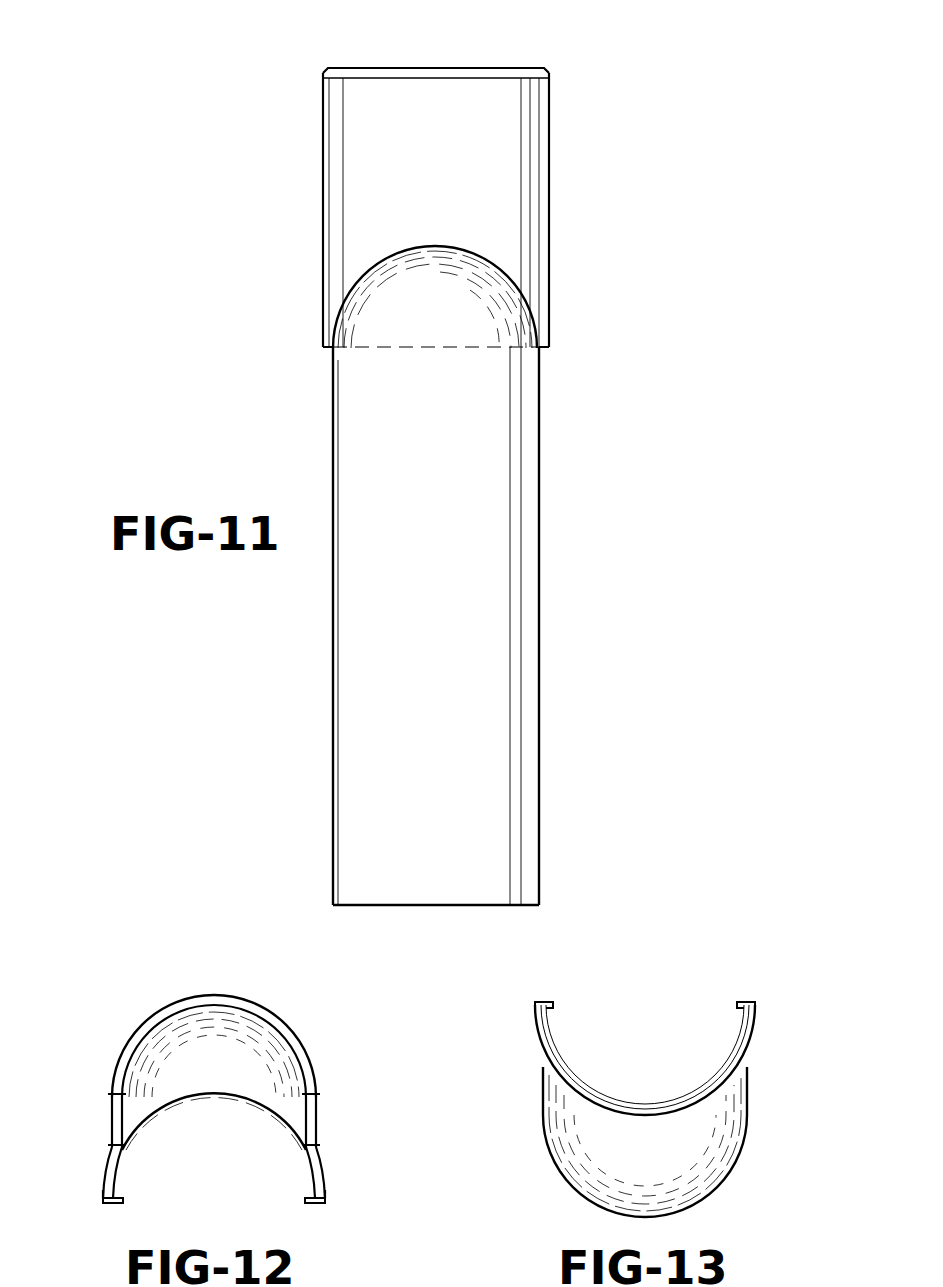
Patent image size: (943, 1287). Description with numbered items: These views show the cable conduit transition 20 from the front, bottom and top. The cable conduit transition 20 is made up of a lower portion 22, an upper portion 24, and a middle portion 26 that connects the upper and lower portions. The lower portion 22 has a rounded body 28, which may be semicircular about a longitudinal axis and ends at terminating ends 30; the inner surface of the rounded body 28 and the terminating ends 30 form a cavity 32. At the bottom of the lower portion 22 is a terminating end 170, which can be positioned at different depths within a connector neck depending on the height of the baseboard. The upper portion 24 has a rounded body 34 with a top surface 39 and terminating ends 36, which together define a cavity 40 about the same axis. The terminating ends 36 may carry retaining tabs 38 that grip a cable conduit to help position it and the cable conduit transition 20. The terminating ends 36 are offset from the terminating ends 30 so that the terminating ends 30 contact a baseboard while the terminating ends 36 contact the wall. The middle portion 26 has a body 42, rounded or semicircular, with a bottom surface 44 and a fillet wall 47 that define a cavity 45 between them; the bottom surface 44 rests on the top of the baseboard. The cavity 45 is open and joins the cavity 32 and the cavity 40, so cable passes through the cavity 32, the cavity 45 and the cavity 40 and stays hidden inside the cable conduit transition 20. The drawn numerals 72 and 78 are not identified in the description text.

In FIG. 11, the cable conduit transition 20 is at (461, 486).
In FIG. 12, the cable conduit transition 20 is at (216, 1060).
In FIG. 13, the cable conduit transition 20 is at (666, 1084).
In FIG. 11, the lower portion 22 is at (417, 646).
In FIG. 11, the rounded body 28 is at (383, 745).
In FIG. 11, the upper portion 24 is at (411, 204).
In FIG. 13, the upper portion 24 is at (673, 1046).
In FIG. 11, the rounded body 34 is at (385, 135).
In FIG. 13, the rounded body 34 is at (770, 1045).
In FIG. 11, the middle portion 26 is at (381, 297).
In FIG. 12, the middle portion 26 is at (214, 1107).
In FIG. 13, the middle portion 26 is at (694, 1142).
In FIG. 11, the body 42 is at (400, 297).
In FIG. 12, the body 42 is at (216, 1065).
In FIG. 13, the body 42 is at (738, 1186).
In FIG. 12, the terminating ends 30 is at (112, 1095).
In FIG. 11, the cavity 32 is at (333, 665).
In FIG. 12, the cavity 32 is at (214, 1060).
In FIG. 12, the cavity 45 is at (272, 1076).
In FIG. 11, the terminating ends 36 is at (323, 180).
In FIG. 12, the terminating ends 36 is at (103, 1206).
In FIG. 12, the retaining tabs 38 is at (118, 1207).
In FIG. 13, the retaining tabs 38 is at (549, 1004).
In FIG. 11, the top surface 39 is at (500, 68).
In FIG. 13, the top surface 39 is at (644, 1115).
In FIG. 12, the cavity 40 is at (278, 1186).
In FIG. 13, the cavity 40 is at (583, 1058).
In FIG. 11, the bottom surface 44 is at (331, 349).
In FIG. 12, the bottom surface 44 is at (108, 1172).
In FIG. 12, the fillet wall 47 is at (113, 1143).
In FIG. 12, the outer surface 72 is at (214, 990).
In FIG. 12, the outer surface 78 is at (186, 990).
In FIG. 11, the terminating end 170 is at (405, 905).
In FIG. 12, the terminating end 170 is at (232, 996).